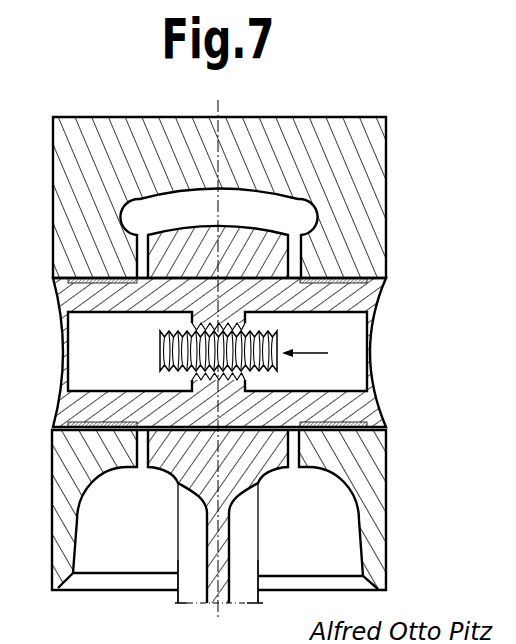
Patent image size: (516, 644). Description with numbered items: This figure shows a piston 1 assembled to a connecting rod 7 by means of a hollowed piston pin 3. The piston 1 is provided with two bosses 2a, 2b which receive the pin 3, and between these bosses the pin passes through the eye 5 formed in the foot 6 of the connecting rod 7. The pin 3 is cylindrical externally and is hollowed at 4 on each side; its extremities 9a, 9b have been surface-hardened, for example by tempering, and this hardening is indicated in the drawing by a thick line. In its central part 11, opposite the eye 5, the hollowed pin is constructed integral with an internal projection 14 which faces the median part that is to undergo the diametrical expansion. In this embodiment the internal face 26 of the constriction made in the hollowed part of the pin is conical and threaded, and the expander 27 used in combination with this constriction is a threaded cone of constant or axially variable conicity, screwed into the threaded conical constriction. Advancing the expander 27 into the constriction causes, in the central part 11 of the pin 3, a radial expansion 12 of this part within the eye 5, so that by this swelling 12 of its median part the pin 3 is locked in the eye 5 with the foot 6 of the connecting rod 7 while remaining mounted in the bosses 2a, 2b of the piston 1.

The piston 1 is at (360, 145).
The boss 2a is at (77, 455).
The boss 2b is at (358, 460).
The pin 3 is at (90, 295).
The hollowed portion 4 is at (90, 331).
The eye 5 is at (158, 275).
The foot 6 is at (183, 463).
The connecting rod 7 is at (220, 597).
The pin extremity 9a is at (90, 422).
The pin extremity 9b is at (352, 425).
The central part 11 is at (227, 283).
The radial expansion 12 is at (217, 433).
The internal projection 14 is at (225, 383).
The internal face of the constriction 26 is at (173, 326).
The expander 27 is at (173, 370).